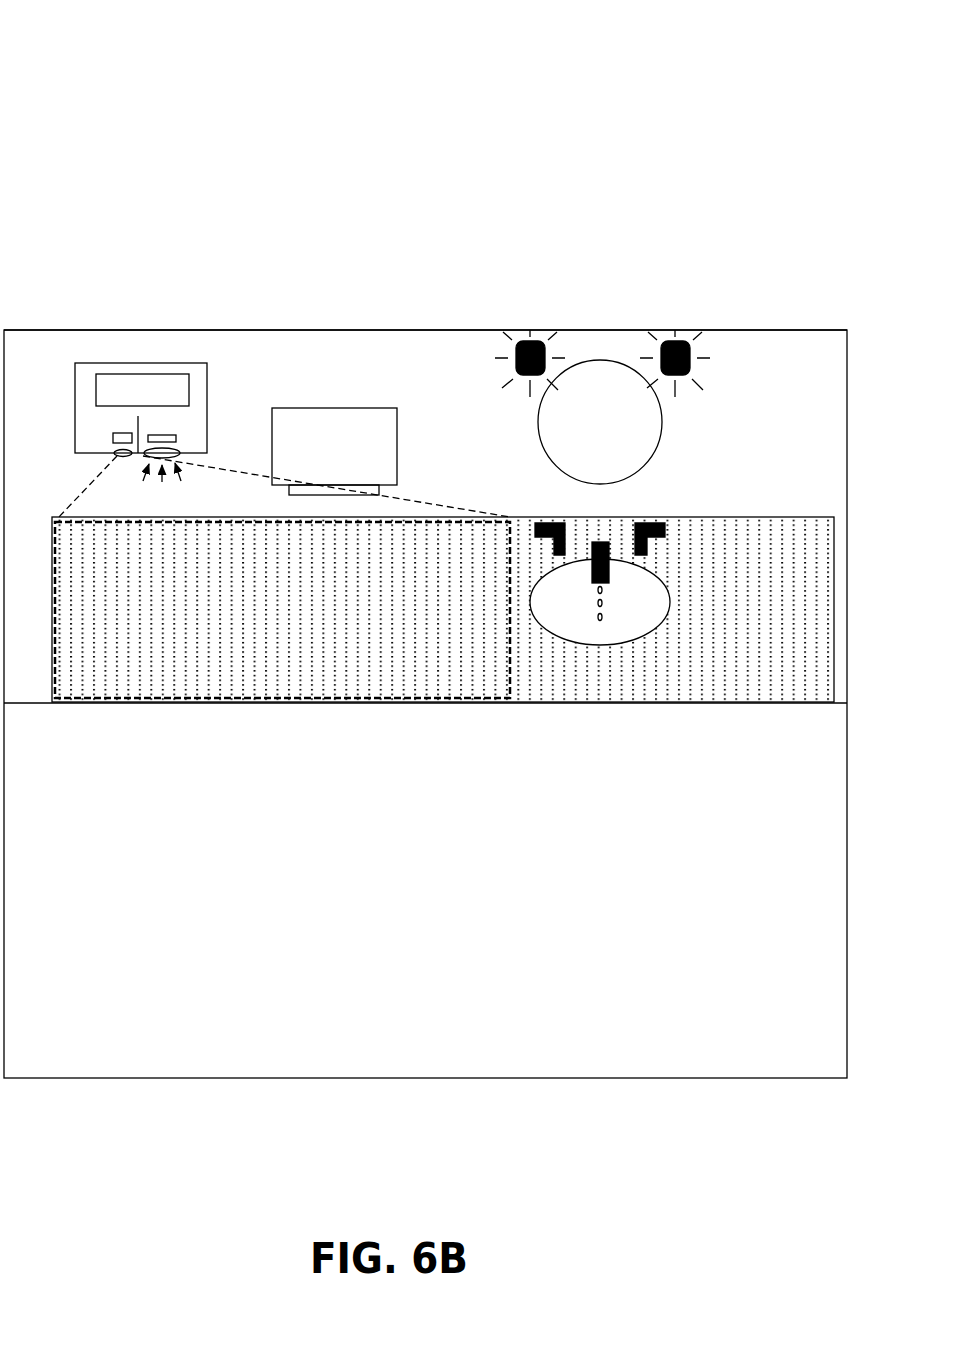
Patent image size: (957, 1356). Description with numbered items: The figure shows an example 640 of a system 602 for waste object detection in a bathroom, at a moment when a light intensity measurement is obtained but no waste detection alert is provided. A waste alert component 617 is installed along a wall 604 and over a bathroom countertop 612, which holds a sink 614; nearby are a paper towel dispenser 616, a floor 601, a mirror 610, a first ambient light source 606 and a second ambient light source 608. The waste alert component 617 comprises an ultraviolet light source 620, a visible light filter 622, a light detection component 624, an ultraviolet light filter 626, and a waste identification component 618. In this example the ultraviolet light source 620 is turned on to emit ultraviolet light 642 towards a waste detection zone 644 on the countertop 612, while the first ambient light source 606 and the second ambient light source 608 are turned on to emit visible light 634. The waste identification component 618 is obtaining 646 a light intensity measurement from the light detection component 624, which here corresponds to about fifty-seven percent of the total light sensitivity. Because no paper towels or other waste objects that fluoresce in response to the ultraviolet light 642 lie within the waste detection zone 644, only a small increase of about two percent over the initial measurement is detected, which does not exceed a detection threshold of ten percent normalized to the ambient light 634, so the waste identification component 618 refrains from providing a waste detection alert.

The example 640 is at (168, 62).
The floor 601 is at (678, 838).
The system 602 is at (153, 312).
The wall 604 is at (318, 330).
The first ambient light source 606 is at (527, 343).
The second ambient light source 608 is at (681, 338).
The mirror 610 is at (570, 367).
The bathroom countertop 612 is at (700, 517).
The sink 614 is at (578, 512).
The paper towel dispenser 616 is at (307, 408).
The waste alert component 617 is at (207, 375).
The waste identification component 618 is at (103, 374).
The ultraviolet light source 620 is at (122, 432).
The visible light filter 622 is at (116, 451).
The light detection component 624 is at (170, 435).
The ultraviolet light filter 626 is at (180, 452).
The visible light 634 is at (496, 407).
The ultraviolet light 642 is at (85, 494).
The waste detection zone 644 is at (508, 668).
The obtaining 646 is at (192, 482).